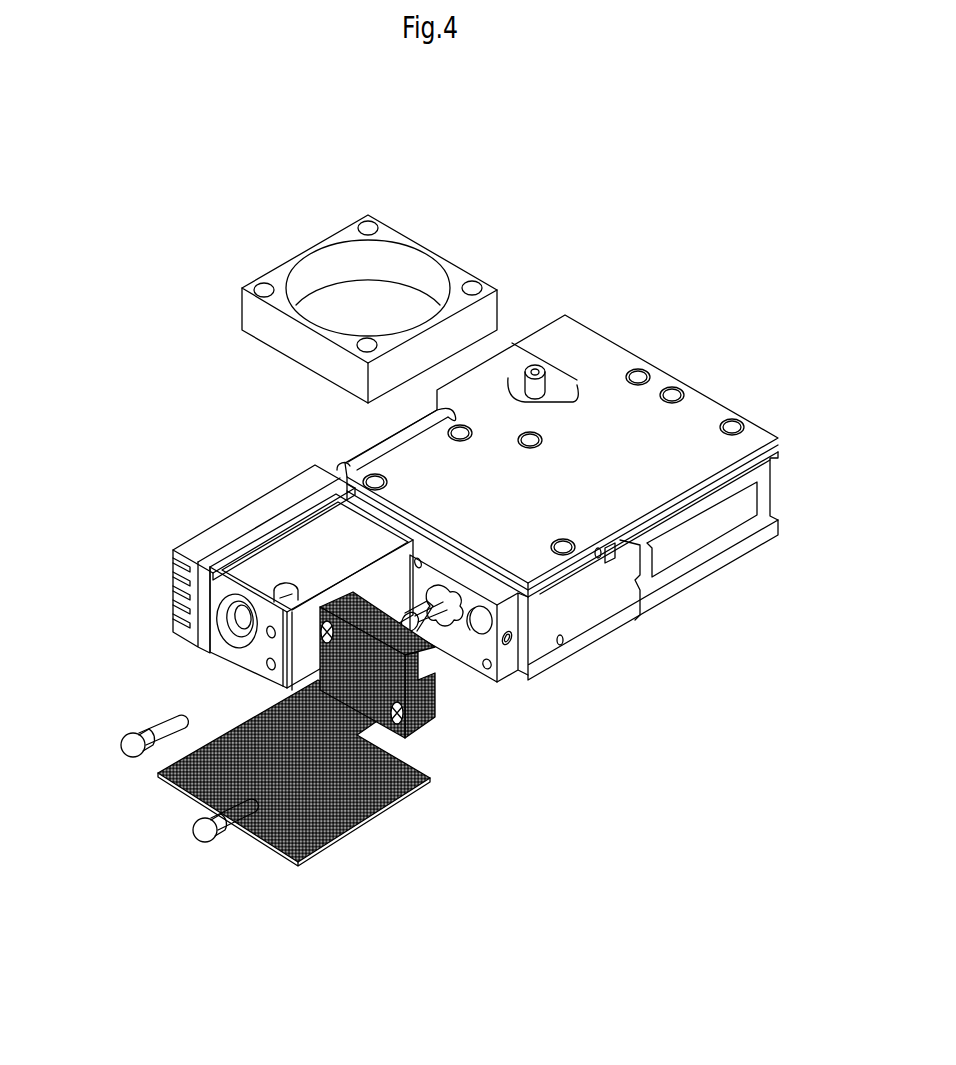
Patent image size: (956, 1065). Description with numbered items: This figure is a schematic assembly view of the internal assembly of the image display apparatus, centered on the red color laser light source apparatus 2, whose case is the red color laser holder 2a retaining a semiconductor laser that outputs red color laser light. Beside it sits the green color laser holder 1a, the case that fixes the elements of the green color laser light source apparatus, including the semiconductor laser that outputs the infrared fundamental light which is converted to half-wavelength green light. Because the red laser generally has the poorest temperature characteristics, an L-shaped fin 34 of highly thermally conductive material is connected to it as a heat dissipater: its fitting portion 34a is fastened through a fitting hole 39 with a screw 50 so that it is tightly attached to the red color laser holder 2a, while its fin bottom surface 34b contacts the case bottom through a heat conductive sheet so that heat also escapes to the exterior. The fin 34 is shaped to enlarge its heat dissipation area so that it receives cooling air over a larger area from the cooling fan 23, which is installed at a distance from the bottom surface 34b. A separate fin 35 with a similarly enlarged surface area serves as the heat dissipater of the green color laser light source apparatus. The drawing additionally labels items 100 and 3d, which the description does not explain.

The laser module assembly 100 is at (673, 457).
The cooling fan 23 is at (255, 315).
The groove 3d is at (388, 447).
The fin 35 is at (267, 507).
The green color laser holder 1a is at (278, 548).
The fitting hole 39 is at (390, 710).
The red color laser light source apparatus 2 is at (553, 628).
The red color laser holder 2a is at (507, 660).
The fin 34 is at (388, 729).
The fitting portion 34a is at (363, 671).
The fin bottom surface 34b is at (350, 778).
The screw 50 is at (203, 832).